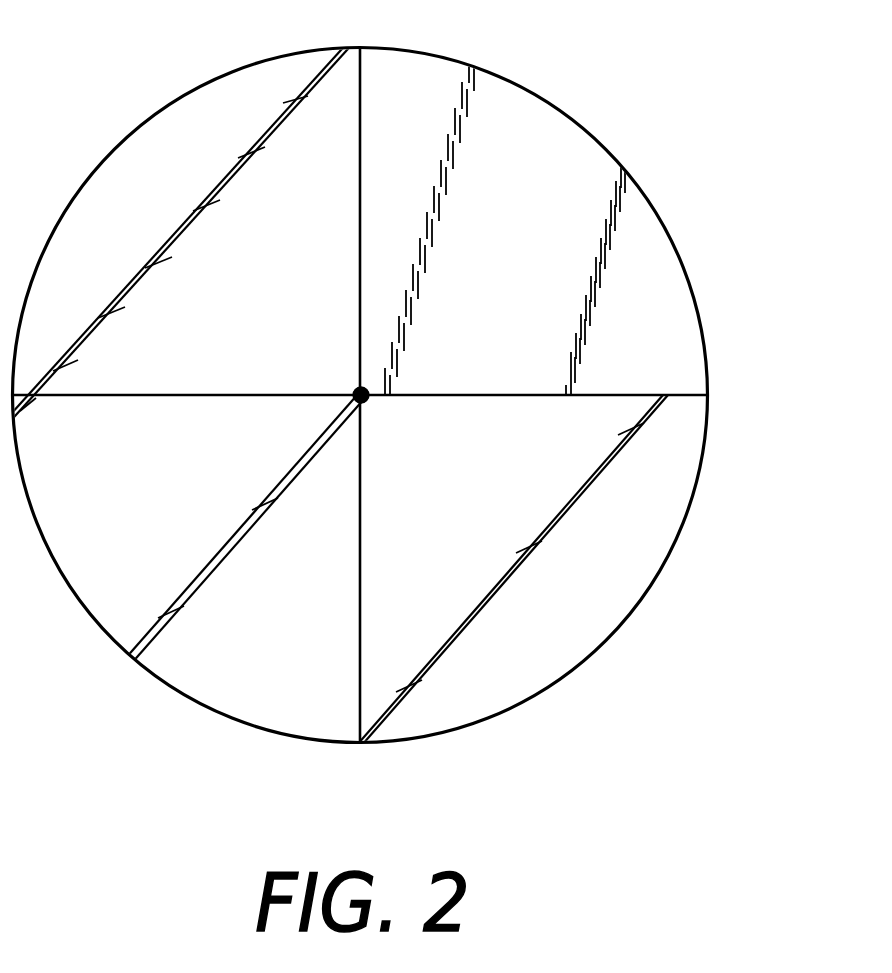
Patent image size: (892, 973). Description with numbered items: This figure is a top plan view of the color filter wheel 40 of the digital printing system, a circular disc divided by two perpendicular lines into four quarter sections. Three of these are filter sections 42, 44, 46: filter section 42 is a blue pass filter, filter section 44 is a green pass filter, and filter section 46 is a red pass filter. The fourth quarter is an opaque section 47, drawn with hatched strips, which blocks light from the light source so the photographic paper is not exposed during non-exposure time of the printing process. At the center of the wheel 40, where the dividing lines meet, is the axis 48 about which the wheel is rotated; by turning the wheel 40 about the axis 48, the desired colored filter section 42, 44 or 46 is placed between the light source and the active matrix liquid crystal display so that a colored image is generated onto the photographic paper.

The color filter wheel 40 is at (628, 118).
The filter section 42 is at (245, 290).
The filter section 44 is at (245, 520).
The filter section 46 is at (529, 520).
The opaque section 47 is at (528, 290).
The axis 48 is at (356, 387).